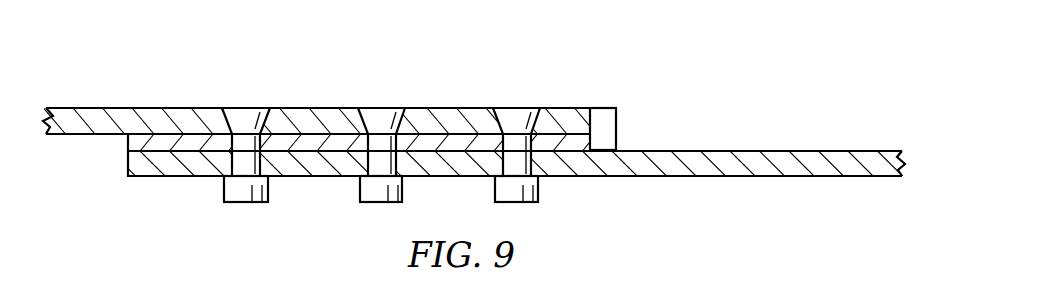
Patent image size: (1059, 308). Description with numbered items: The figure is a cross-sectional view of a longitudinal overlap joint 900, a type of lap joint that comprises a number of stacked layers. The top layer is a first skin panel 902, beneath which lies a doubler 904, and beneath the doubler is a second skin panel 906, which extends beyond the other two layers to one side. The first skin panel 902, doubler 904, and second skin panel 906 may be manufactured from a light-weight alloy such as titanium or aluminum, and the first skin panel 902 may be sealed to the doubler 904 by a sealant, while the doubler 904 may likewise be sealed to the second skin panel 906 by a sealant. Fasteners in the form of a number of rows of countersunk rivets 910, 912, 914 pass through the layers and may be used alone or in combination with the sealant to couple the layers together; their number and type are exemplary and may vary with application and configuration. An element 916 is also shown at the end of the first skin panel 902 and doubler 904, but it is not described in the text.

The longitudinal overlap joint 900 is at (684, 50).
The first skin panel 902 is at (298, 108).
The doubler 904 is at (128, 143).
The second skin panel 906 is at (702, 177).
The countersunk rivet 910 is at (225, 189).
The countersunk rivet 912 is at (360, 189).
The countersunk rivet 914 is at (540, 189).
The spacer block 916 is at (602, 108).